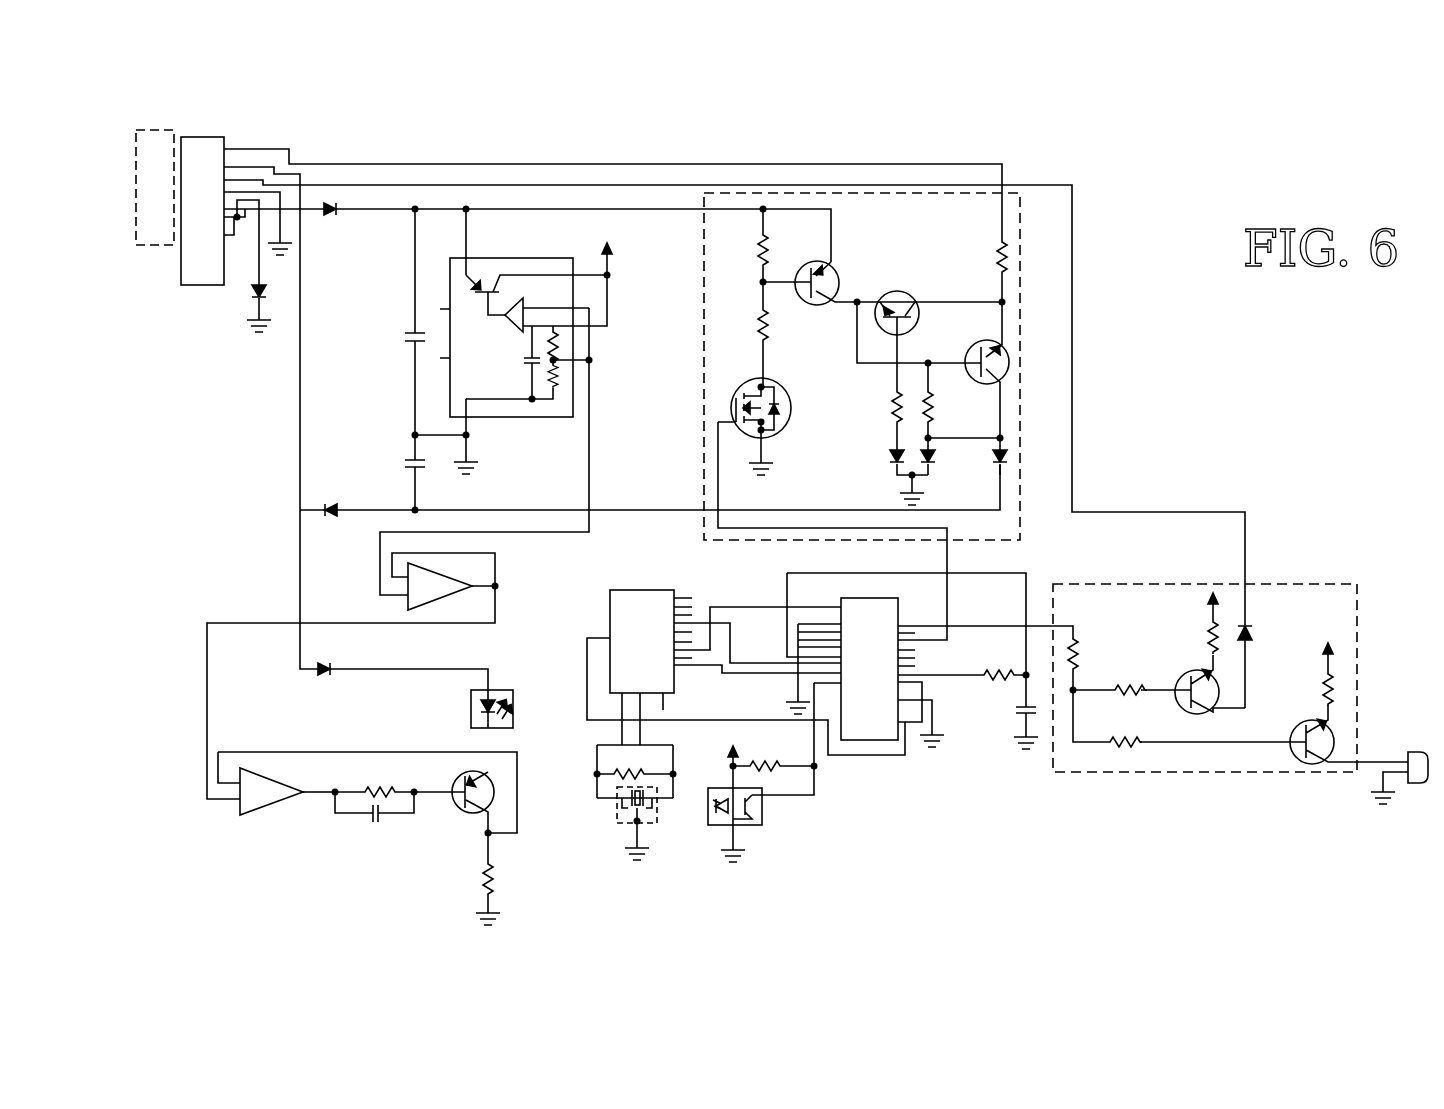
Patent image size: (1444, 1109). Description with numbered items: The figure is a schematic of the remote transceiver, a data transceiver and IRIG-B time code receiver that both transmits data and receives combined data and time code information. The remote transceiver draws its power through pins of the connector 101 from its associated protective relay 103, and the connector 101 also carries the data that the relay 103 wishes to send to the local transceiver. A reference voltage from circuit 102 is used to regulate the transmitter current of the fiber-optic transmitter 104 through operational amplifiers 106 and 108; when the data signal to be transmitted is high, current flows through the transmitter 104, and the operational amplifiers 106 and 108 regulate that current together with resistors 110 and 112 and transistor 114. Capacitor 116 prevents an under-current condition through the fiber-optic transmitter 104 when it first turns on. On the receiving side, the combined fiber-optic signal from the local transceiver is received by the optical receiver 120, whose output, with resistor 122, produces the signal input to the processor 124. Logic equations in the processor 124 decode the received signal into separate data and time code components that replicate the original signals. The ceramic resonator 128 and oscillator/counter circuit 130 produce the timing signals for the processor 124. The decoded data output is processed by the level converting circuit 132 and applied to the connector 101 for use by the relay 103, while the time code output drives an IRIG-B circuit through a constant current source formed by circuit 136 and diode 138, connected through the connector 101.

The protective relay 103 is at (173, 130).
The connector 101 is at (222, 137).
The diode 138 is at (251, 292).
The reference voltage circuit 102 is at (506, 258).
The operational amplifier 106 is at (440, 575).
The fiber-optic transmitter 104 is at (505, 690).
The operational amplifier 108 is at (282, 787).
The resistor 110 is at (386, 788).
The transistor 114 is at (500, 783).
The capacitor 116 is at (368, 822).
The resistor 112 is at (492, 868).
The oscillator/counter circuit 130 is at (647, 590).
The processor 124 is at (882, 598).
The resistor 122 is at (760, 765).
The ceramic resonator 128 is at (617, 822).
The optical receiver 120 is at (758, 825).
The level converting circuit 132 is at (1020, 495).
The constant current source circuit 136 is at (1357, 598).